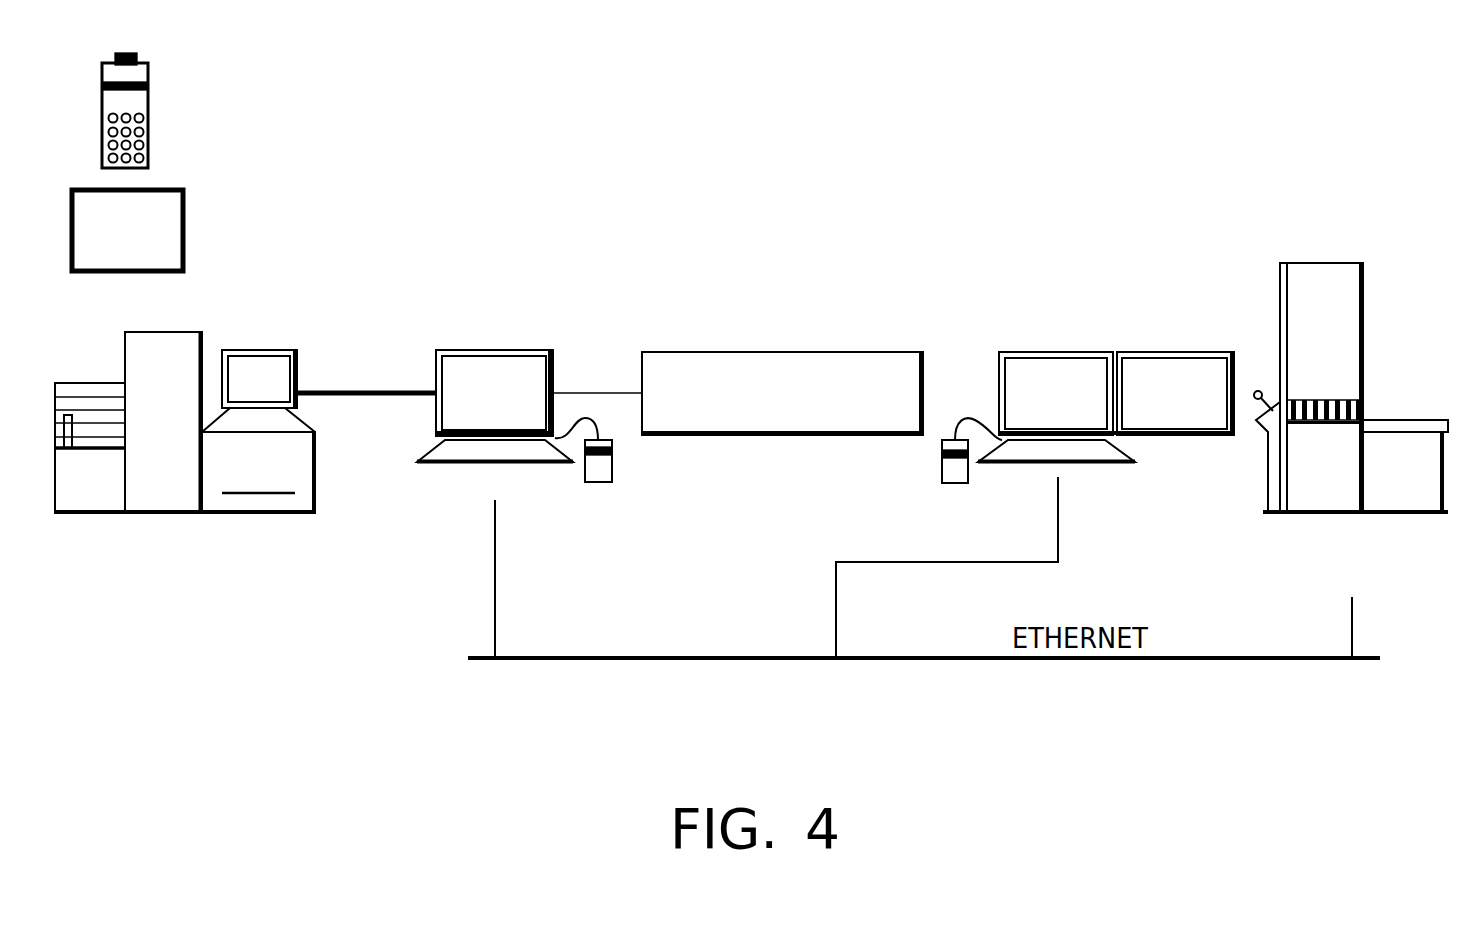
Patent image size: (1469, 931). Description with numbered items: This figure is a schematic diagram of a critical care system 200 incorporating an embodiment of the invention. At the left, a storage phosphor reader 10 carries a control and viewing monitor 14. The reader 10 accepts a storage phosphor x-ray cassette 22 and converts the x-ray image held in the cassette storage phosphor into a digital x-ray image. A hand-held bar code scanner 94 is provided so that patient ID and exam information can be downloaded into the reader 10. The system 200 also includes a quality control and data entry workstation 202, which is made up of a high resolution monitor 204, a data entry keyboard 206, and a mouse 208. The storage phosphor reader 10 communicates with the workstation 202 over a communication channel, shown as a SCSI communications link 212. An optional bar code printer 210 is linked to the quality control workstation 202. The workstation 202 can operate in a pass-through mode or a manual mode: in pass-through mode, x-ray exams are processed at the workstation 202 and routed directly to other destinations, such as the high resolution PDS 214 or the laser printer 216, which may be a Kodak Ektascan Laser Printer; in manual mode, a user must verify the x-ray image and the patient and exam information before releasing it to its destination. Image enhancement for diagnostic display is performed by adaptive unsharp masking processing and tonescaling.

The storage phosphor reader 10 is at (260, 514).
The control and viewing monitor 14 is at (290, 350).
The storage phosphor x-ray cassette 22 is at (185, 232).
The hand-held bar code scanner 94 is at (150, 118).
The critical care system 200 is at (901, 218).
The quality control and data entry workstation 202 is at (537, 408).
The high resolution monitor 204 is at (465, 350).
The data entry keyboard 206 is at (445, 463).
The mouse 208 is at (598, 483).
The bar code printer 210 is at (852, 352).
The SCSI communications link 212 is at (398, 390).
The high resolution PDS 214 is at (1063, 352).
The laser printer 216 is at (1322, 263).